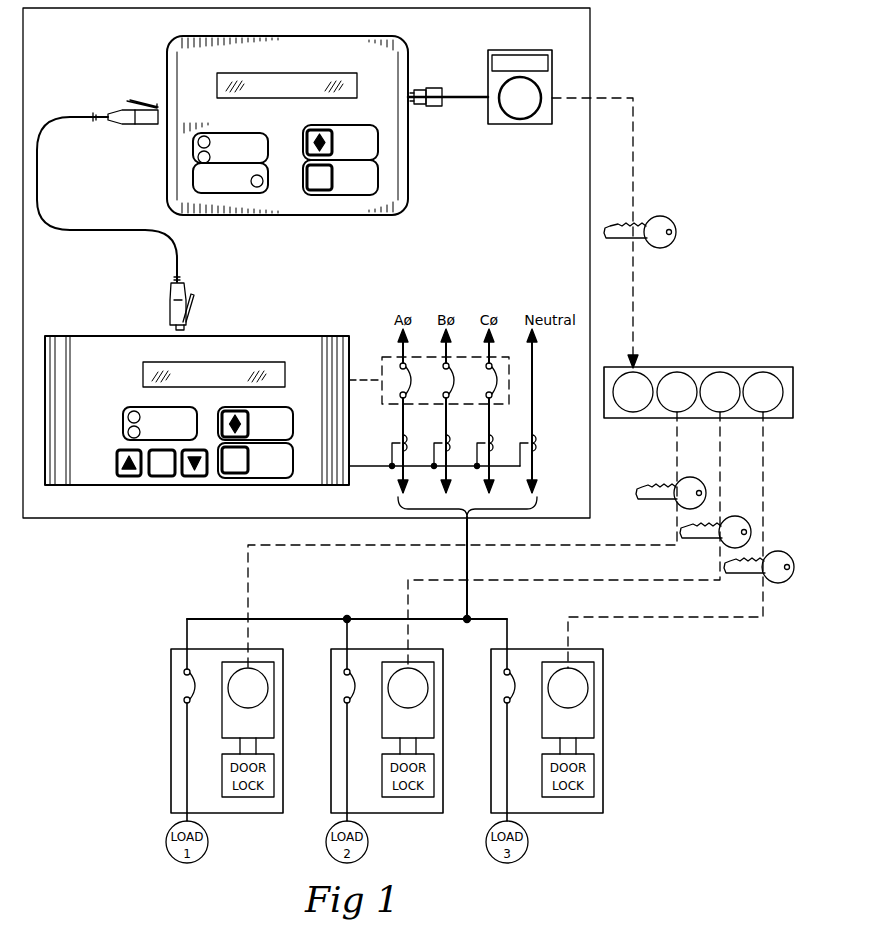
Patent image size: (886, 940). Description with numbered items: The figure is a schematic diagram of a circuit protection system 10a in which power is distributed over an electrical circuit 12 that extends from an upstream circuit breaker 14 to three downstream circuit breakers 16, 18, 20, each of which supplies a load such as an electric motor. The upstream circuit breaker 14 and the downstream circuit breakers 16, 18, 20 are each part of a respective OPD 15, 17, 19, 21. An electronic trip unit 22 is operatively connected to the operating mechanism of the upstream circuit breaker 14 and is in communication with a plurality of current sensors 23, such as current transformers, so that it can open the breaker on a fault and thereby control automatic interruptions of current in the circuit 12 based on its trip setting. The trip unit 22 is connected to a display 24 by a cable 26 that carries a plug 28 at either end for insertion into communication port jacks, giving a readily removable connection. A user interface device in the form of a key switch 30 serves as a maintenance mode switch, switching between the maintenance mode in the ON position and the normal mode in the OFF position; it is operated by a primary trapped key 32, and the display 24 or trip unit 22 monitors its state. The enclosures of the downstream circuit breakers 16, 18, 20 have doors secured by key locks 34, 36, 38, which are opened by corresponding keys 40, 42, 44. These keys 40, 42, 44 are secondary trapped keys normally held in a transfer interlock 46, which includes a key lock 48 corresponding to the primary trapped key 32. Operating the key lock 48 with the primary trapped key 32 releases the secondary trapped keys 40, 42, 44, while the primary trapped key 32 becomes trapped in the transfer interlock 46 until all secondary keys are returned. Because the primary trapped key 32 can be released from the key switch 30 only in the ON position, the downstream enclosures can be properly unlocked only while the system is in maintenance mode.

The circuit protection system 10a is at (657, 169).
The electrical circuit 12 is at (467, 566).
The upstream circuit breaker 14 is at (388, 357).
The OPD 15 is at (195, 520).
The downstream circuit breaker 16 is at (194, 702).
The OPD 17 is at (243, 814).
The downstream circuit breaker 18 is at (354, 702).
The OPD 19 is at (403, 814).
The downstream circuit breaker 20 is at (514, 702).
The OPD 21 is at (562, 814).
The electronic trip unit 22 is at (87, 487).
The current sensors 23 is at (400, 437).
The display 24 is at (318, 215).
The cable 26 is at (177, 253).
The plug 28 is at (191, 312).
The key switch 30 is at (520, 124).
The primary trapped key 32 is at (662, 218).
The key lock 34 is at (270, 684).
The key lock 36 is at (430, 684).
The key lock 38 is at (590, 684).
The key 40 is at (672, 502).
The key 42 is at (716, 541).
The key 44 is at (762, 576).
The transfer interlock 46 is at (742, 366).
The key lock 48 is at (645, 378).